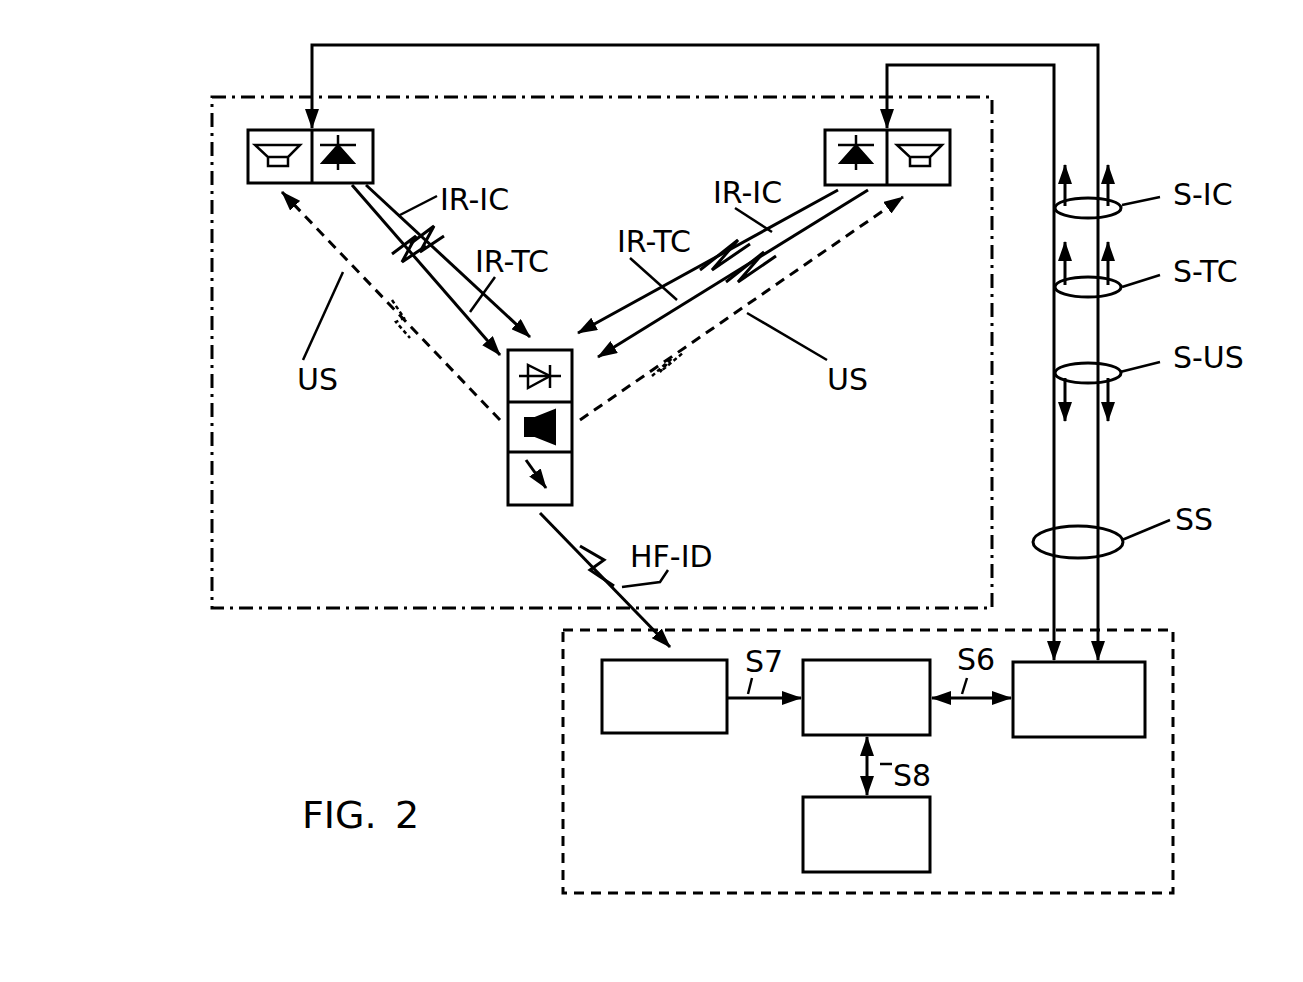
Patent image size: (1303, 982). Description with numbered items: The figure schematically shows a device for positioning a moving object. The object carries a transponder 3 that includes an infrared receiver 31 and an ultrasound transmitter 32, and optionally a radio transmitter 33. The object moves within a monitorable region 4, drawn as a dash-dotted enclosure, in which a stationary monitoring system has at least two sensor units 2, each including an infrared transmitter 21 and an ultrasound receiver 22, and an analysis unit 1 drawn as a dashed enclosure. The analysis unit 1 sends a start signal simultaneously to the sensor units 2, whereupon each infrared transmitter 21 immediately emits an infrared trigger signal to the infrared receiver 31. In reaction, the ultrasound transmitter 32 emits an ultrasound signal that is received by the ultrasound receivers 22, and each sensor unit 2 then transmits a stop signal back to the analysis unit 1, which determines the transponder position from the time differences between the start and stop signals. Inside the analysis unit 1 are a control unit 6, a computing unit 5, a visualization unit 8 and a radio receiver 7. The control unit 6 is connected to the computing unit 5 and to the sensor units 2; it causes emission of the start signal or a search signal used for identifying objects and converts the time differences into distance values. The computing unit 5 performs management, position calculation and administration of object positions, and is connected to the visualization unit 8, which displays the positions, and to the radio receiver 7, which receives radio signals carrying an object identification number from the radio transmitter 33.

The analysis unit 1 is at (562, 740).
The sensor unit 2 is at (340, 128).
The infrared transmitter 21 is at (345, 158).
The ultrasound receiver 22 is at (273, 160).
The transponder 3 is at (572, 437).
The infrared receiver 31 is at (540, 365).
The ultrasound transmitter 32 is at (525, 428).
The radio transmitter 33 is at (535, 480).
The monitorable region 4 is at (270, 557).
The computing unit 5 is at (815, 735).
The control unit 6 is at (1077, 737).
The radio receiver 7 is at (655, 733).
The visualization unit 8 is at (930, 850).